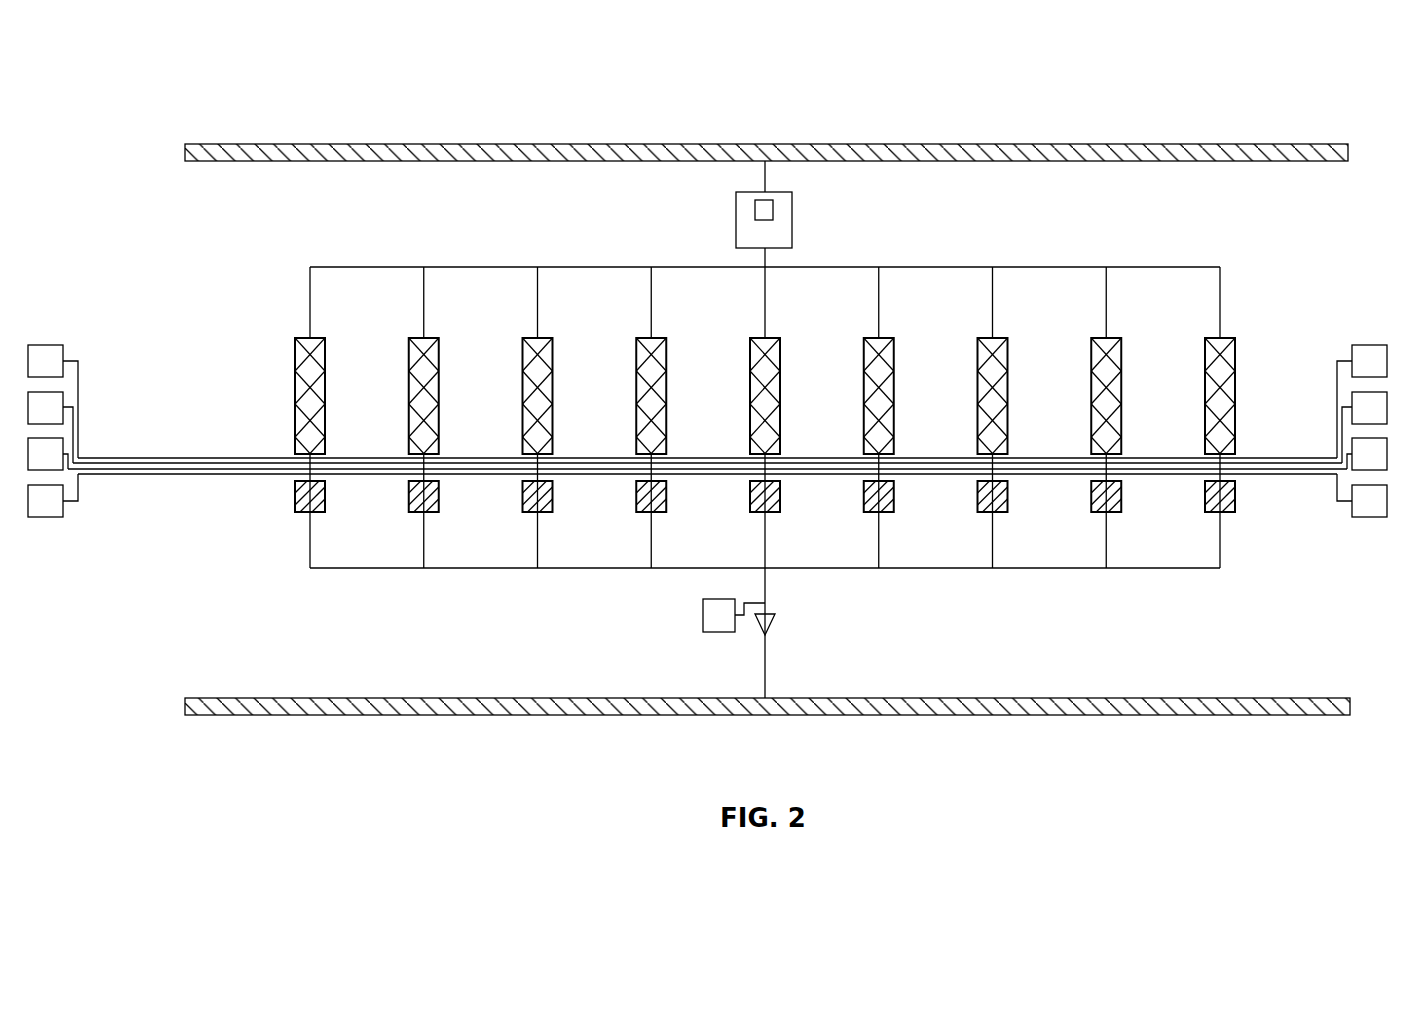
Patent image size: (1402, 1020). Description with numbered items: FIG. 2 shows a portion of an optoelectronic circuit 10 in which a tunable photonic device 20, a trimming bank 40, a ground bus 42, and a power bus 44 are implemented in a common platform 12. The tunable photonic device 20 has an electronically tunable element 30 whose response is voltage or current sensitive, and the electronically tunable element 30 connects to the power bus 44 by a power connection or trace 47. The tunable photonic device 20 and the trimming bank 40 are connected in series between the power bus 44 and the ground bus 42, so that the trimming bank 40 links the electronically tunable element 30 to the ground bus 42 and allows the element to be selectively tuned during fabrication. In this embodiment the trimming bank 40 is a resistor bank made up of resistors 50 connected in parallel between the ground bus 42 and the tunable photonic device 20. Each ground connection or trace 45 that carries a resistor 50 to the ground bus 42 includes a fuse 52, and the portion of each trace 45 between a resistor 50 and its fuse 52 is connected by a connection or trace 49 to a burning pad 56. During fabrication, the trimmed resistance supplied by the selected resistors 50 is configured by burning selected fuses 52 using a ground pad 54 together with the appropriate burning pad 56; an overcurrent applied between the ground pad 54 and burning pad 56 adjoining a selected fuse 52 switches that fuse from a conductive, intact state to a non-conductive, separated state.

The optoelectronic circuit 10 is at (222, 68).
The common platform 12 is at (781, 121).
The tunable photonic device 20 is at (708, 213).
The electronically tunable element 30 is at (773, 214).
The trimming bank 40 is at (1258, 274).
The ground bus 42 is at (1098, 716).
The power bus 44 is at (1122, 142).
The ground connection or trace 45 is at (812, 570).
The power connection or trace 47 is at (1030, 265).
The connection or trace 49 is at (145, 478).
The resistor 50 is at (295, 362).
The fuse 52 is at (295, 496).
The ground pad 54 is at (702, 613).
The burning pad 56 is at (48, 520).